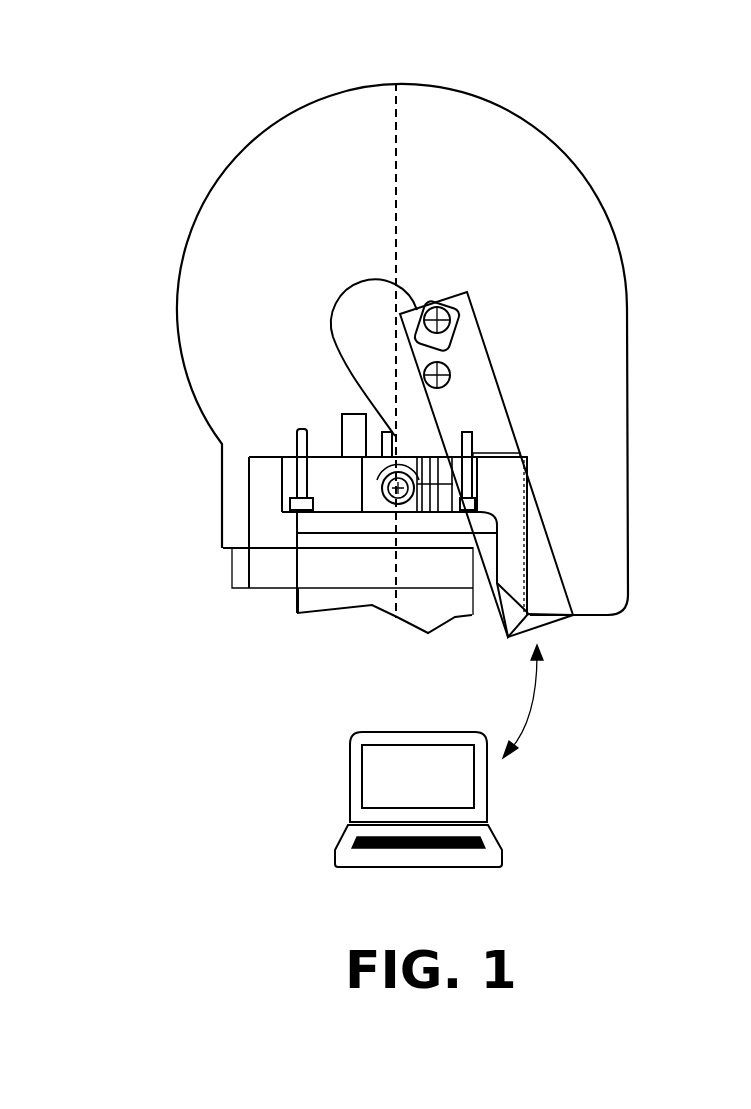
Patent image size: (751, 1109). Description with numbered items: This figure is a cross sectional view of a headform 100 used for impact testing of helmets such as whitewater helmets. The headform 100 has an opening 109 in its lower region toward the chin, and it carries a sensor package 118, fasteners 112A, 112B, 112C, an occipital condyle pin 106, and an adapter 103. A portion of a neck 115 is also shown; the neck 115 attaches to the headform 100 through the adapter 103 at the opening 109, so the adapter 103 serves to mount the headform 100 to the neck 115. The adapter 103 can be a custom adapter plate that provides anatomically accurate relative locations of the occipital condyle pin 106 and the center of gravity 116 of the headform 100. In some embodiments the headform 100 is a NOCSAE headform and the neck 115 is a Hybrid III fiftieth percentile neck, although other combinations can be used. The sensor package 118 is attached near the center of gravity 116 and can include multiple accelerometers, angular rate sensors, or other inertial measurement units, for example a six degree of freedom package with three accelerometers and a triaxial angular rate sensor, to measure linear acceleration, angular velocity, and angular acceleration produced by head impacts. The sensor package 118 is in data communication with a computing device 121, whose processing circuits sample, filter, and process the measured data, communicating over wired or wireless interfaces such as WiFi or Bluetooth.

The headform 100 is at (556, 113).
The adapter 103 is at (338, 532).
The occipital condyle pin 106 is at (440, 484).
The opening 109 is at (258, 512).
The fastener 112A is at (395, 437).
The fastener 112B is at (295, 432).
The fastener 112C is at (472, 462).
The neck 115 is at (412, 523).
The center of gravity 116 is at (398, 160).
The sensor package 118 is at (552, 622).
The computing device 121 is at (493, 830).